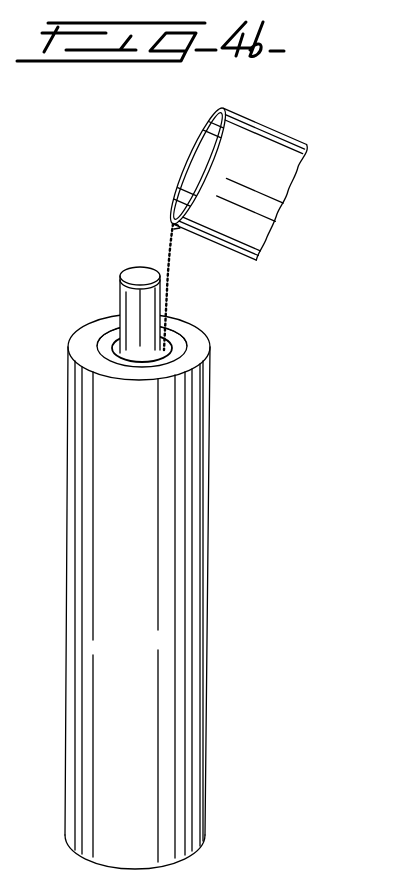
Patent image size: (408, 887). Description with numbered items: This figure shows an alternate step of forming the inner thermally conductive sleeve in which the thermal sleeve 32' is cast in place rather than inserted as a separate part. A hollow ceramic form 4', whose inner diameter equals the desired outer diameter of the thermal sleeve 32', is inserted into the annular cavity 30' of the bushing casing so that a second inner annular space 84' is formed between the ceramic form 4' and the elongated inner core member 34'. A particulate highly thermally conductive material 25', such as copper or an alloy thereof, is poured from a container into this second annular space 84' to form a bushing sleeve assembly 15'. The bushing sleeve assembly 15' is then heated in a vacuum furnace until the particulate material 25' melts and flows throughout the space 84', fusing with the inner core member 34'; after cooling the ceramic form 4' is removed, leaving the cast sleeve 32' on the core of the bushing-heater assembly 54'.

The particulate thermally conductive material 25' is at (214, 226).
The inner core member 34' is at (121, 286).
The thermal sleeve 32' is at (113, 311).
The second inner annular space 84' is at (97, 348).
The annular cavity 30' is at (169, 328).
The ceramic form 4' is at (162, 347).
The bushing-heater assembly 54' is at (47, 609).
The bushing sleeve assembly 15' is at (174, 608).